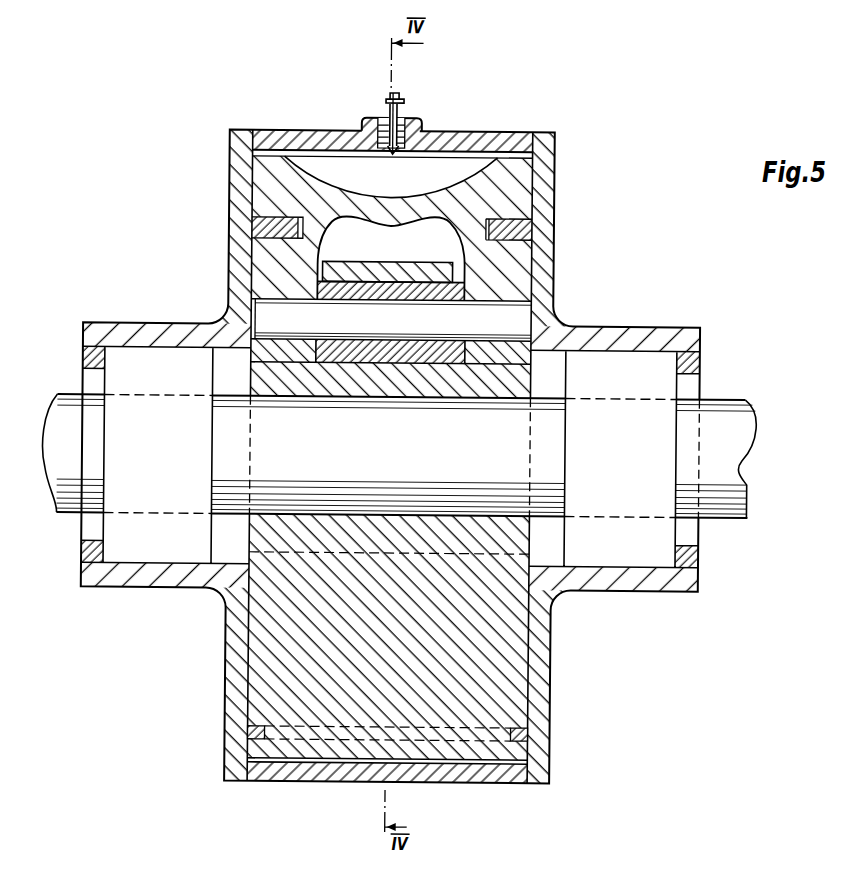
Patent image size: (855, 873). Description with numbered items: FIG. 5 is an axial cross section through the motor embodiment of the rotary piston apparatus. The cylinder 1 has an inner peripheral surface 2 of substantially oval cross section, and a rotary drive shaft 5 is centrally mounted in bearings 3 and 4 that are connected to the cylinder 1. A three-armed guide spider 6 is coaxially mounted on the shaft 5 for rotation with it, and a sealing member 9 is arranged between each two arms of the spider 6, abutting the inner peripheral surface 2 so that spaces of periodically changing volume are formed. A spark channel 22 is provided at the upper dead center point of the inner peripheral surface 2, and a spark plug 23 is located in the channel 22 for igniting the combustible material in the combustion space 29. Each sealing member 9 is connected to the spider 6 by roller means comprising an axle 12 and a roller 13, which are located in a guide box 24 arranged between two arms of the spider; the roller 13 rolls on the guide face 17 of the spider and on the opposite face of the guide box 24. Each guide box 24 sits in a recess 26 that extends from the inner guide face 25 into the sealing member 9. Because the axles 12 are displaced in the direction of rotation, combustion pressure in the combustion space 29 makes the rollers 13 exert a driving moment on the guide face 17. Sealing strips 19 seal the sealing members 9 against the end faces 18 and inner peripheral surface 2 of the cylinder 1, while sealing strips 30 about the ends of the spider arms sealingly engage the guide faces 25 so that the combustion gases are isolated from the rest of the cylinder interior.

The cylinder 1 is at (556, 153).
The inner peripheral surface 2 is at (466, 136).
The bearing 3 is at (118, 330).
The bearing 4 is at (660, 335).
The rotary drive shaft 5 is at (710, 408).
The guide spider 6 is at (512, 626).
The sealing member 9 is at (480, 206).
The axle 12 is at (500, 310).
The roller 13 is at (433, 288).
The guide face 17 is at (353, 366).
The end face 18 is at (533, 188).
The sealing strip 19 is at (526, 231).
The spark channel 22 is at (413, 153).
The spark plug 23 is at (400, 112).
The guide box 24 is at (353, 273).
The inner guide face 25 is at (273, 360).
The recess 26 is at (463, 380).
The combustion space 29 is at (498, 158).
The sealing strip 30 is at (525, 735).